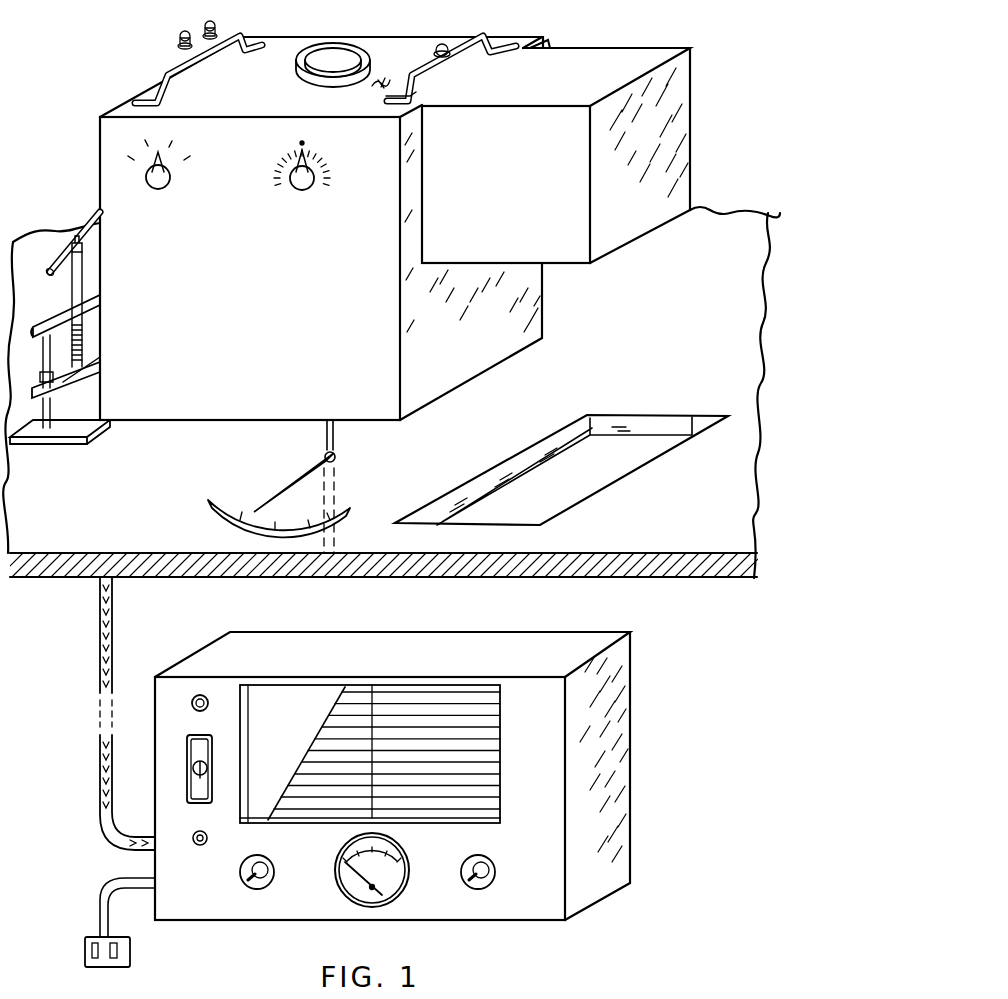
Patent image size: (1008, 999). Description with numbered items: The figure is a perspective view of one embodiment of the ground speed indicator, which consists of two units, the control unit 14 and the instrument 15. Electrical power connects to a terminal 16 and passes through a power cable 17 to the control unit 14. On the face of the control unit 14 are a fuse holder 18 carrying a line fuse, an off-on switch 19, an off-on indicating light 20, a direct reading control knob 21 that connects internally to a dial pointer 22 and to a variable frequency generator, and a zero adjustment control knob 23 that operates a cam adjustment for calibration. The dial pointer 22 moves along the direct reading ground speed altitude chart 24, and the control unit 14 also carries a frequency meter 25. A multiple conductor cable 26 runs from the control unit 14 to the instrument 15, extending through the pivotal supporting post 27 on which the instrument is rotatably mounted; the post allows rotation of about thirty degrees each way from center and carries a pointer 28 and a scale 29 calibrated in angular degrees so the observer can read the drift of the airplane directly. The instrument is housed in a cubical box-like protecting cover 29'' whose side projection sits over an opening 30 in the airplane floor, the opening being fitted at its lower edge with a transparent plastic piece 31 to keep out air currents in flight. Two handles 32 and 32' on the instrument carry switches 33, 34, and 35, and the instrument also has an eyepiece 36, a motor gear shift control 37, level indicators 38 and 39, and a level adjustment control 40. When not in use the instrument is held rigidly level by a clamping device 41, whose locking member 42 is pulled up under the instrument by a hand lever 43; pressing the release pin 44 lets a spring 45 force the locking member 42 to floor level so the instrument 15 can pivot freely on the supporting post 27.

The control unit 14 is at (582, 632).
The instrument 15 is at (371, 33).
The terminal 16 is at (131, 952).
The power cable 17 is at (100, 882).
The fuse holder 18 is at (207, 842).
The off-on switch 19 is at (207, 768).
The off-on indicating light 20 is at (208, 704).
The direct reading control knob 21 is at (274, 863).
The dial pointer 22 is at (372, 692).
The zero adjustment control knob 23 is at (496, 875).
The direct reading ground speed altitude chart 24 is at (313, 748).
The frequency meter 25 is at (409, 875).
The multiple conductor cable 26 is at (113, 622).
The pivotal supporting post 27 is at (336, 434).
The pointer 28 is at (274, 495).
The scale 29 is at (262, 518).
The protecting cover 29'' is at (250, 438).
The opening 30 is at (645, 463).
The transparent plastic piece 31 is at (577, 445).
The handle 32 is at (468, 51).
The handle 32' is at (184, 69).
The switch 33 is at (183, 36).
The switch 34 is at (210, 27).
The switch 35 is at (441, 44).
The eyepiece 36 is at (369, 58).
The motor gear shift control 37 is at (169, 183).
The level indicator 38 is at (375, 86).
The level indicator 39 is at (420, 93).
The level adjustment control 40 is at (313, 185).
The clamping device 41 is at (50, 312).
The locking member 42 is at (95, 405).
The hand lever 43 is at (65, 258).
The release pin 44 is at (78, 240).
The spring 45 is at (85, 325).